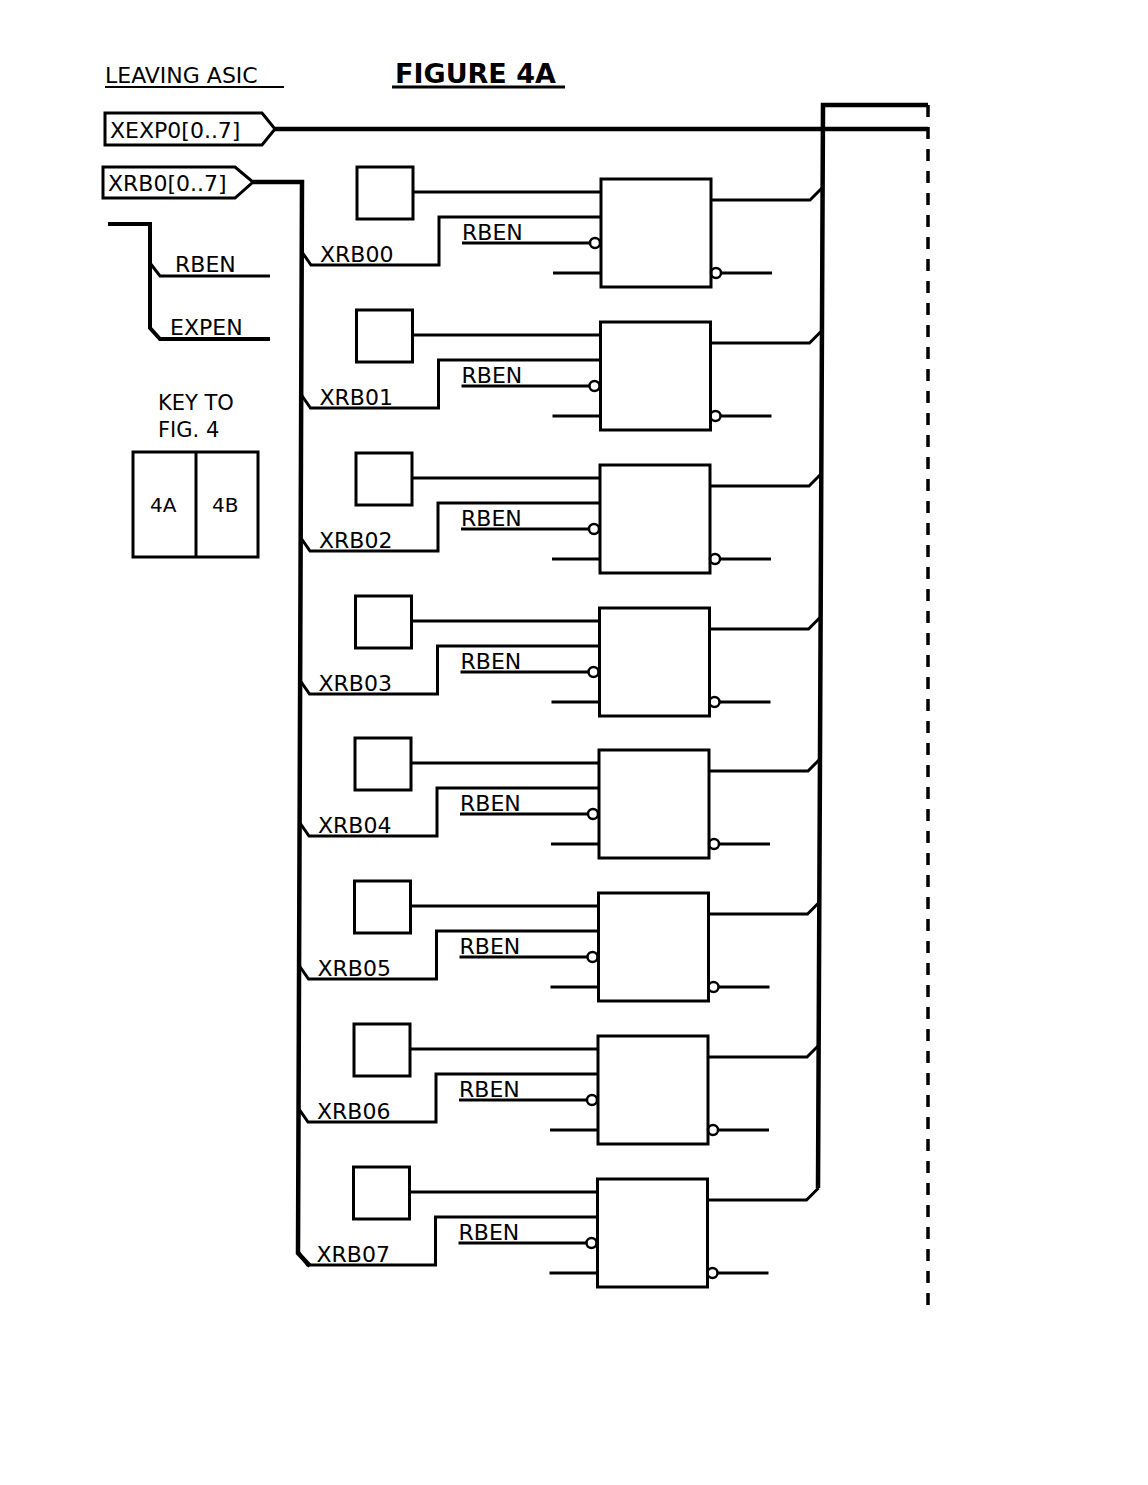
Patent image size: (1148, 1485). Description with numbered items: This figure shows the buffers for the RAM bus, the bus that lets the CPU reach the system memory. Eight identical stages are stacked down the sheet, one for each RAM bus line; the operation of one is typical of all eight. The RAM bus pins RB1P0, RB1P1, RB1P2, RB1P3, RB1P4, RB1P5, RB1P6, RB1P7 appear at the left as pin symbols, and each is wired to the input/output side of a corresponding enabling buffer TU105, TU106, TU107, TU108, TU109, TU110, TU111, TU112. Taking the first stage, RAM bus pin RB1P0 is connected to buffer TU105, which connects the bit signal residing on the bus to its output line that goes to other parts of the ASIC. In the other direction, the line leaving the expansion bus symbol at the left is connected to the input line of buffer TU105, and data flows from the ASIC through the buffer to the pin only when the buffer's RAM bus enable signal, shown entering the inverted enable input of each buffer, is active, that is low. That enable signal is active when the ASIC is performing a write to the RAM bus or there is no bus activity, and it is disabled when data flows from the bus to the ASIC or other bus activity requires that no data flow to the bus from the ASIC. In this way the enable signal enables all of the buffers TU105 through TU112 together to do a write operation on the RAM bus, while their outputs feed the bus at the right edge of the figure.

The buffer TU105 is at (711, 221).
The buffer TU106 is at (711, 364).
The buffer TU107 is at (710, 507).
The buffer TU108 is at (710, 650).
The buffer TU109 is at (709, 792).
The buffer TU110 is at (709, 935).
The buffer TU111 is at (708, 1078).
The buffer TU112 is at (708, 1221).
The RAM bus pin RB1P0 is at (473, 191).
The RAM bus pin RB1P1 is at (473, 334).
The RAM bus pin RB1P2 is at (472, 477).
The RAM bus pin RB1P3 is at (472, 620).
The RAM bus pin RB1P4 is at (471, 762).
The RAM bus pin RB1P5 is at (471, 905).
The RAM bus pin RB1P6 is at (470, 1048).
The RAM bus pin RB1P7 is at (470, 1191).